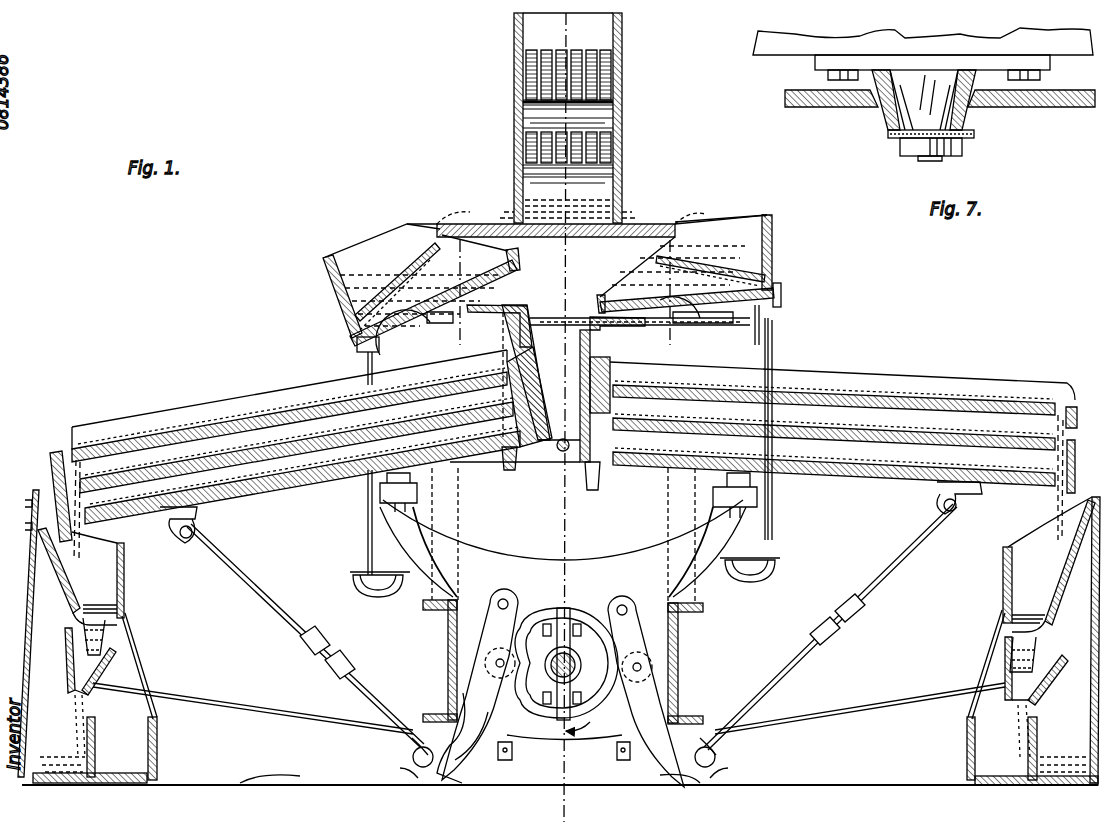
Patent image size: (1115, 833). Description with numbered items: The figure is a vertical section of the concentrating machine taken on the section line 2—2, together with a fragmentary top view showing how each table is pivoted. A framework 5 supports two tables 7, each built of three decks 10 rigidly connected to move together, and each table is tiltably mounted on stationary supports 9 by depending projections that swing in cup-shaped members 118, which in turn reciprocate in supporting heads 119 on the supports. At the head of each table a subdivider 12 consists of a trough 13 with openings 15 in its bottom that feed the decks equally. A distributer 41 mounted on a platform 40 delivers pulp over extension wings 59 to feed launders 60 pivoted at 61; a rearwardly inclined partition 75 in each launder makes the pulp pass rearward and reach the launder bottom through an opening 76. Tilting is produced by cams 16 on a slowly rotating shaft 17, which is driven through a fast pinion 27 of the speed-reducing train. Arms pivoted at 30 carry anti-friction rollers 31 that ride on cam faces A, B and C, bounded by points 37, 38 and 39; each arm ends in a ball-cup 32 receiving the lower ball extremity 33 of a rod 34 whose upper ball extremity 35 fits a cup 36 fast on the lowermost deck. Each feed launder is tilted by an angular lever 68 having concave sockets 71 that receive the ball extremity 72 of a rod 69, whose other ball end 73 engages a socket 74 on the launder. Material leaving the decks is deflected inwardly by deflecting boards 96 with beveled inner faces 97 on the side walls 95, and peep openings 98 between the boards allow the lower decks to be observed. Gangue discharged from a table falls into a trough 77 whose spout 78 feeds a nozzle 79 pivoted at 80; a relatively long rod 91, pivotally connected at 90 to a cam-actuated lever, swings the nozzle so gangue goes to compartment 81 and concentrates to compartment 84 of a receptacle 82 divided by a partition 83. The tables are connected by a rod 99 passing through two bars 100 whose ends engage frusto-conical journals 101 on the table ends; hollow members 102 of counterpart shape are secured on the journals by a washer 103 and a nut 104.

In FIG. 1, the section line 2 is at (566, 33).
In FIG. 1, the framework 5 is at (696, 637).
In FIG. 1, the table 7 is at (573, 386).
In FIG. 1, the stationary support 9 is at (582, 547).
In FIG. 1, the deck 10 is at (300, 490).
In FIG. 1, the subdivider 12 is at (640, 352).
In FIG. 1, the trough 13 is at (520, 312).
In FIG. 1, the opening 15 is at (642, 330).
In FIG. 1, the cam 16 is at (617, 606).
In FIG. 1, the shaft 17 is at (576, 665).
In FIG. 1, the fast pinion 27 is at (490, 623).
In FIG. 1, the pivot 30 is at (500, 592).
In FIG. 1, the anti-friction roller 31 is at (488, 680).
In FIG. 1, the ball-cup 32 is at (412, 760).
In FIG. 1, the lower ball extremity 33 is at (423, 746).
In FIG. 1, the rod 34 is at (572, 627).
In FIG. 1, the upper extremity 35 is at (184, 540).
In FIG. 1, the cup 36 is at (198, 516).
In FIG. 1, the cam point 37 is at (565, 603).
In FIG. 1, the cam point 38 is at (470, 738).
In FIG. 1, the cam point 39 is at (498, 604).
In FIG. 1, the platform 40 is at (640, 225).
In FIG. 1, the distributer 41 is at (577, 118).
In FIG. 1, the extension wing 59 is at (456, 224).
In FIG. 1, the feed launder 60 is at (330, 259).
In FIG. 1, the pivot 61 is at (735, 349).
In FIG. 1, the angular lever 68 is at (370, 600).
In FIG. 1, the rod 69 is at (770, 345).
In FIG. 1, the concave socket 71 is at (356, 590).
In FIG. 1, the ball extremity 72 is at (609, 447).
In FIG. 1, the ball-shaped extremity 73 is at (366, 362).
In FIG. 1, the socket 74 is at (357, 346).
In FIG. 1, the partition 75 is at (385, 262).
In FIG. 1, the opening 76 is at (352, 300).
In FIG. 1, the trough 77 is at (38, 583).
In FIG. 1, the spout 78 is at (106, 638).
In FIG. 1, the nozzle 79 is at (112, 662).
In FIG. 1, the pivot 80 is at (65, 648).
In FIG. 1, the compartment 81 is at (1046, 696).
In FIG. 1, the receptacle 82 is at (565, 793).
In FIG. 1, the partition 83 is at (95, 760).
In FIG. 1, the compartment 84 is at (564, 733).
In FIG. 1, the pivotal connection 90 is at (512, 752).
In FIG. 1, the rod 91 is at (233, 712).
In FIG. 1, the side wall 95 is at (148, 413).
In FIG. 1, the deflecting board 96 is at (54, 455).
In FIG. 1, the beveled inner face 97 is at (1068, 392).
In FIG. 1, the peep opening 98 is at (75, 445).
In FIG. 1, the rod 99 is at (562, 452).
In FIG. 1, the bar 100 is at (508, 462).
In FIG. 7, the bar 100 is at (1065, 108).
In FIG. 7, the frusto-conical journal 101 is at (912, 100).
In FIG. 7, the hollow member 102 is at (975, 105).
In FIG. 7, the washer 103 is at (893, 140).
In FIG. 7, the nut 104 is at (963, 148).
In FIG. 1, the cup-shaped member 118 is at (378, 494).
In FIG. 1, the supporting head 119 is at (392, 510).